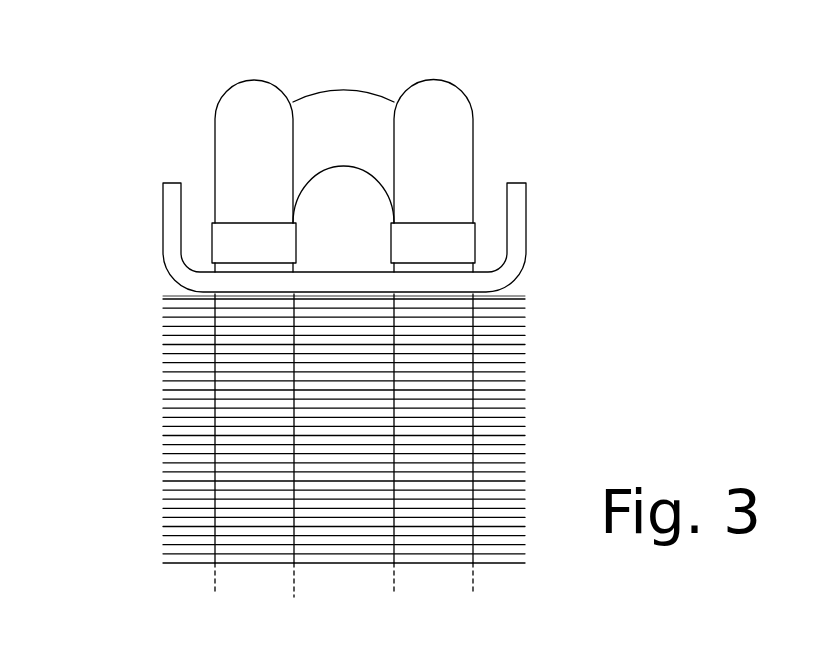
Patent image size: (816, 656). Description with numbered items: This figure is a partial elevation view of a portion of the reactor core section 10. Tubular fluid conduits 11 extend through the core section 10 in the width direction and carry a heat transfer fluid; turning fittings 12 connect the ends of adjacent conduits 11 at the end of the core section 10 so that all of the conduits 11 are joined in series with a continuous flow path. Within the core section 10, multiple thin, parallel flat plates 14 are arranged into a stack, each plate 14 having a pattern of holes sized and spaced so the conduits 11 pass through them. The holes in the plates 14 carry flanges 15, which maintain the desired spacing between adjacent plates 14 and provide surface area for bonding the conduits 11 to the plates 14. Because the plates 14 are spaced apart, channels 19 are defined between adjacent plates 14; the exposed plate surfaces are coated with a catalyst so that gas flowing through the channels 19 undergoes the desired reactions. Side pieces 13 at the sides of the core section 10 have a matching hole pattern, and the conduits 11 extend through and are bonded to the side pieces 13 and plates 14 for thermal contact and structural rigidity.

The core section 10 is at (540, 127).
The tubular fluid conduits 11 is at (417, 569).
The turning fittings 12 is at (228, 95).
The side pieces 13 is at (158, 230).
The flat plates 14 is at (401, 396).
The flanges 15 is at (240, 294).
The channels 19 is at (522, 355).